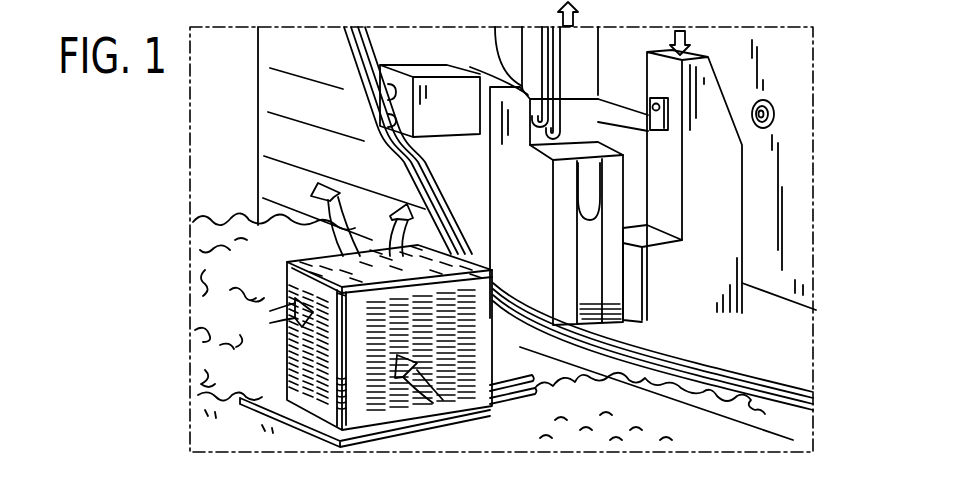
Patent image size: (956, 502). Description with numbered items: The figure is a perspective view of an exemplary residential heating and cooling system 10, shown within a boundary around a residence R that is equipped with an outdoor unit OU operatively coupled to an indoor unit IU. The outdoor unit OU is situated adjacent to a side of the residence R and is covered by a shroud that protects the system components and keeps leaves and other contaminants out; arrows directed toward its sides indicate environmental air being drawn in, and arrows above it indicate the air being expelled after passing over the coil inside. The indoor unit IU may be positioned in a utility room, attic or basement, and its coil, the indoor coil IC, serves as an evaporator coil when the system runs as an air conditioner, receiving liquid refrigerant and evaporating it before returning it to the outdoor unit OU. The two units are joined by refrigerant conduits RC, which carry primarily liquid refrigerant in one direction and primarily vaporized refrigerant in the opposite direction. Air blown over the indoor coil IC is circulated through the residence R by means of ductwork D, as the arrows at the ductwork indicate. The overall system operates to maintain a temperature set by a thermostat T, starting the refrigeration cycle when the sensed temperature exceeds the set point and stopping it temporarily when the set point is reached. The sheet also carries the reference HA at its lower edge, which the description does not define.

The HVAC system 10 is at (830, 47).
The residence R is at (311, 45).
The indoor coil IC is at (582, 108).
The indoor unit IU is at (613, 288).
The ductwork D is at (728, 215).
The thermostat T is at (774, 110).
The outdoor unit OU is at (323, 412).
The refrigerant conduits RC is at (530, 377).
The HVAC apparatus HA is at (74, 494).